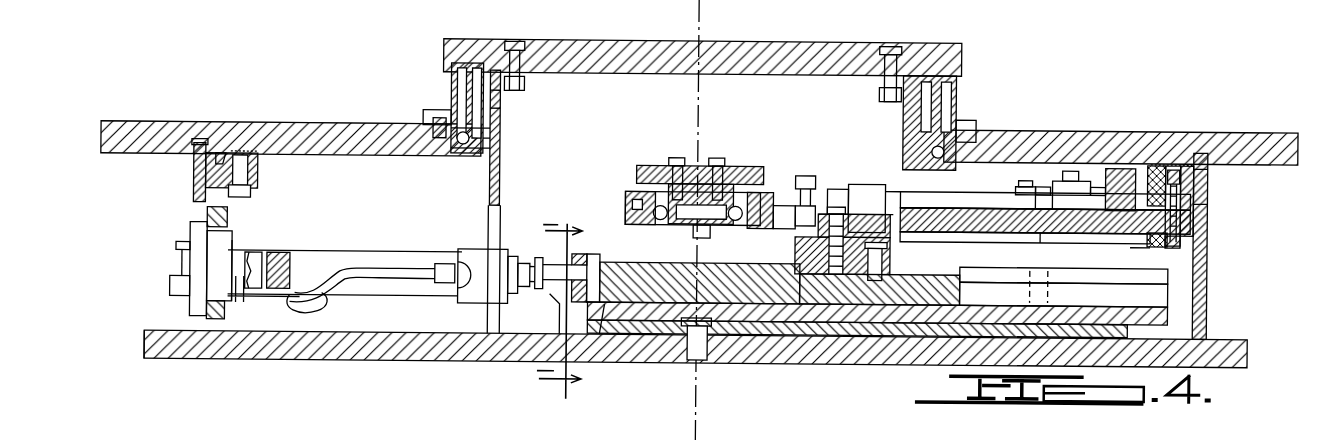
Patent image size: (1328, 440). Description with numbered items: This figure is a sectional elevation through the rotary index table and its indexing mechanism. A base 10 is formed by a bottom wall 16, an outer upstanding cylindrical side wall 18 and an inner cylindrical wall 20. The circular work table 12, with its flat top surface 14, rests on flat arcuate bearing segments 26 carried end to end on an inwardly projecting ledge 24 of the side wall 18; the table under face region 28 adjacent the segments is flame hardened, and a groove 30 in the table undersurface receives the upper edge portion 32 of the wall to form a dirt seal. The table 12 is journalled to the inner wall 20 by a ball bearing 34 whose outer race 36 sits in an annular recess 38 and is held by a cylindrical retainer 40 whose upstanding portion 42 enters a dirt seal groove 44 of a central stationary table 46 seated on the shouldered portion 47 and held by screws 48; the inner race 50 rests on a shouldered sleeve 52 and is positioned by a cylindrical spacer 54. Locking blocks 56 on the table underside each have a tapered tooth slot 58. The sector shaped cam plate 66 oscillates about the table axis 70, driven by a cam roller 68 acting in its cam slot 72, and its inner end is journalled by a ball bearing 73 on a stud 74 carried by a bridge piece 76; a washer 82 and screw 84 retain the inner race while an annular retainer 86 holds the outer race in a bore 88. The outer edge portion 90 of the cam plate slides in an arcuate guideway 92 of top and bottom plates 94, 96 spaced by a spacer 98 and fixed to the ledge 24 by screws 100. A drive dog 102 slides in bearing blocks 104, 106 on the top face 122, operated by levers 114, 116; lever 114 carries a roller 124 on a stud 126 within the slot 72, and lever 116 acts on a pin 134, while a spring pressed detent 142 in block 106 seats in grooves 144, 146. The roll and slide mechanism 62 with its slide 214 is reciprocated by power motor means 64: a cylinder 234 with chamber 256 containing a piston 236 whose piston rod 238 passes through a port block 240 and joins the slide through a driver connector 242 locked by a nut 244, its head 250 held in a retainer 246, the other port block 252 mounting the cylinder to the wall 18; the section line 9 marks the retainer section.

The base 10 is at (318, 371).
The work table 12 is at (1262, 140).
The flat top surface 14 is at (1225, 145).
The bottom wall 16 is at (380, 345).
The outer side wall 18 is at (193, 175).
The inner wall 20 is at (500, 178).
The table supporting ledge 24 is at (240, 195).
The arcuate segments 26 is at (258, 172).
The under face region 28 is at (245, 155).
The groove 30 is at (200, 143).
The upper edge portion 32 is at (218, 157).
The ball bearing 34 is at (499, 141).
The outer race 36 is at (462, 150).
The annular recess 38 is at (440, 140).
The cylindrical retainer 40 is at (430, 116).
The upstanding portion 42 is at (455, 90).
The dirt seal forming groove 44 is at (460, 70).
The central stationary table 46 is at (612, 40).
The shouldered portion 47 is at (500, 98).
The screws 48 is at (892, 55).
The inner race 50 is at (499, 130).
The shouldered sleeve 52 is at (505, 151).
The cylindrical spacer 54 is at (500, 110).
The locking blocks 56 is at (1128, 164).
The tooth slot 58 is at (1110, 165).
The roll and slide mechanism 62 is at (900, 255).
The power motor means 64 is at (423, 250).
The cam plate 66 is at (795, 192).
The cam roller 68 is at (810, 298).
The axis 70 is at (705, 37).
The cam slot 72 is at (900, 220).
The ball bearing 73 is at (690, 292).
The stud 74 is at (760, 180).
The bridge piece 76 is at (718, 160).
The washer 82 is at (680, 232).
The screw 84 is at (706, 232).
The annular retainer 86 is at (620, 185).
The bore 88 is at (638, 228).
The outer edge portion 90 is at (1128, 238).
The arcuate guideway 92 is at (1207, 216).
The top plate 94 is at (1207, 207).
The bottom plate 96 is at (1207, 242).
The spacer 98 is at (1207, 232).
The screws 100 is at (1155, 243).
The drive dog 102 is at (895, 190).
The bearing block 104 is at (858, 183).
The bearing block 106 is at (1045, 246).
The lever 114 is at (838, 188).
The lever 116 is at (1042, 184).
The top face 122 is at (1000, 215).
The roller 124 is at (780, 228).
The stud 126 is at (836, 206).
The pin 134 is at (1023, 178).
The spring pressed detent 142 is at (1065, 168).
The groove 144 is at (1018, 206).
The groove 146 is at (1082, 206).
The slide 214 is at (808, 290).
The cylinder 234 is at (280, 262).
The piston 236 is at (255, 256).
The piston rod 238 is at (278, 284).
The port block 240 is at (475, 252).
The driver connector 242 is at (548, 290).
The nut 244 is at (565, 262).
The retainer 246 is at (555, 340).
The head 250 is at (590, 302).
The port block 252 is at (200, 261).
The cylinder chamber 256 is at (385, 271).
The section line 9- 9 is at (566, 308).